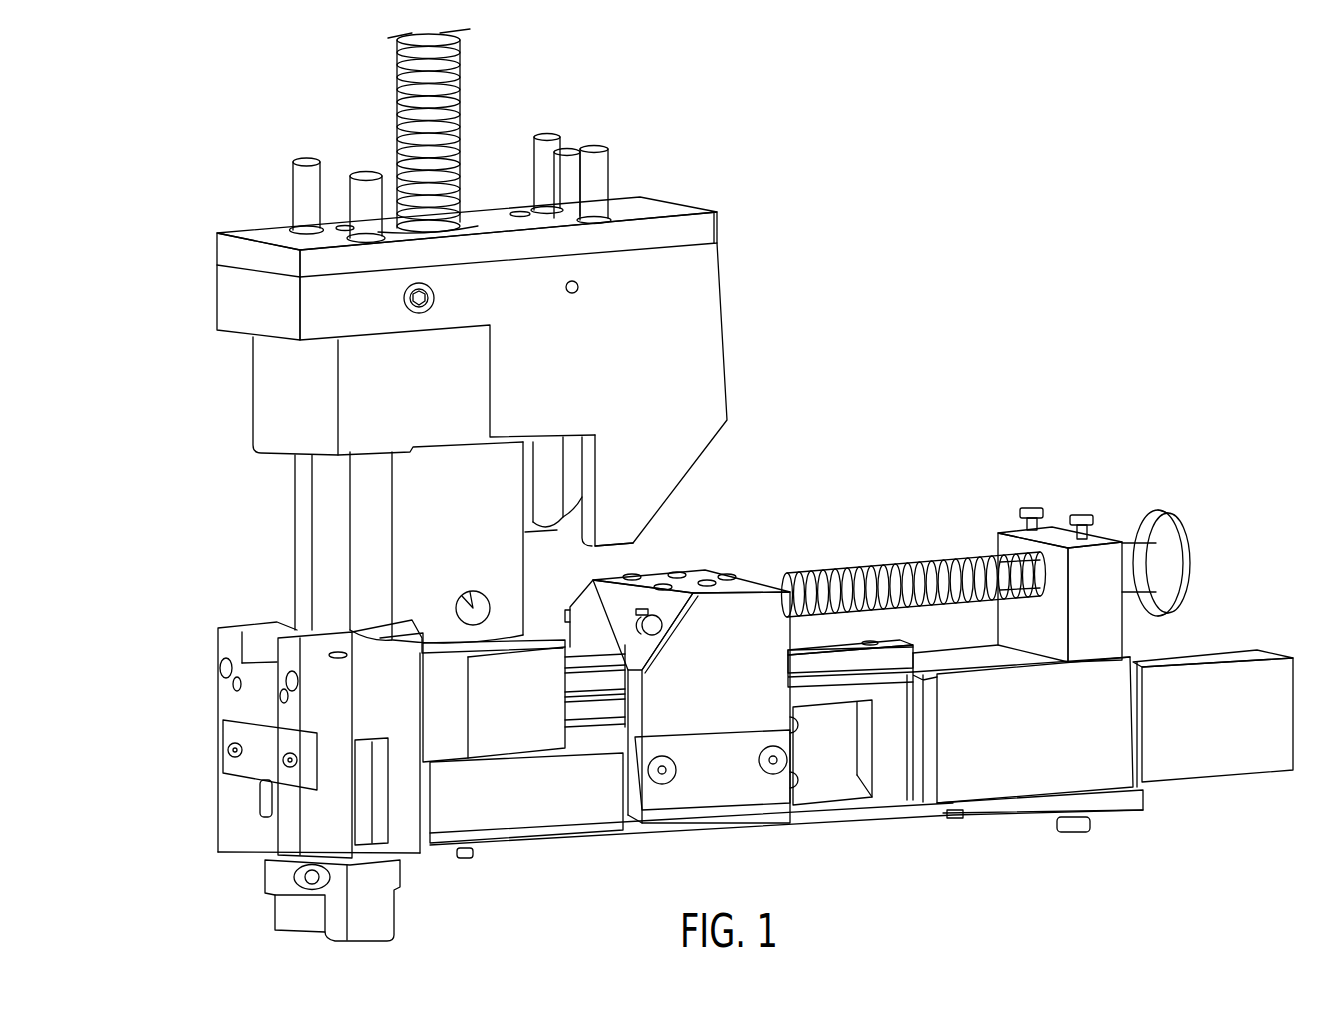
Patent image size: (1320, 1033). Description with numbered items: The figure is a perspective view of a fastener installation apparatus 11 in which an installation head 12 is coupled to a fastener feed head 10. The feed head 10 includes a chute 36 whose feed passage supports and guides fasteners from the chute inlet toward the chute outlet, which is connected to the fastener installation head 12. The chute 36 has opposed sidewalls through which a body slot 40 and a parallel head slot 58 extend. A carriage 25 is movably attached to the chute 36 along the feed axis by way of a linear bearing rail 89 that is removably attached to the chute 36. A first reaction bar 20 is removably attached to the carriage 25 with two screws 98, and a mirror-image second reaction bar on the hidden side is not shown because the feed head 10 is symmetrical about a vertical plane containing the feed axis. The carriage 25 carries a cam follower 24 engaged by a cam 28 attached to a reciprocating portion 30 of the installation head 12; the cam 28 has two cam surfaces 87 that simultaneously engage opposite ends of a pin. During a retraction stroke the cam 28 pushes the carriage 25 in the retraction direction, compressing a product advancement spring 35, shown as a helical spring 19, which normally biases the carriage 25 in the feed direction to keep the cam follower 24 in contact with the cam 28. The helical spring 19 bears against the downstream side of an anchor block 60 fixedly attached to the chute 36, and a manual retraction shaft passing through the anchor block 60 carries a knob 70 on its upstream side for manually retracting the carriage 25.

The fastener feed head 10 is at (666, 838).
The apparatus 11 is at (740, 146).
The fastener installation head 12 is at (284, 410).
The helical spring 19 is at (975, 551).
The first reaction bar 20 is at (740, 786).
The cam follower 24 is at (636, 624).
The carriage 25 is at (660, 708).
The cam 28 is at (635, 478).
The reciprocating portion 30 is at (641, 361).
The product advancement spring 35 is at (838, 556).
The chute 36 is at (898, 762).
The body slot 40 is at (804, 786).
The head slot 58 is at (804, 728).
The anchor block 60 is at (1113, 627).
The knob 70 is at (1186, 562).
The cam surfaces 87 is at (578, 503).
The linear bearing rail 89 is at (893, 648).
The screws 98 is at (767, 756).